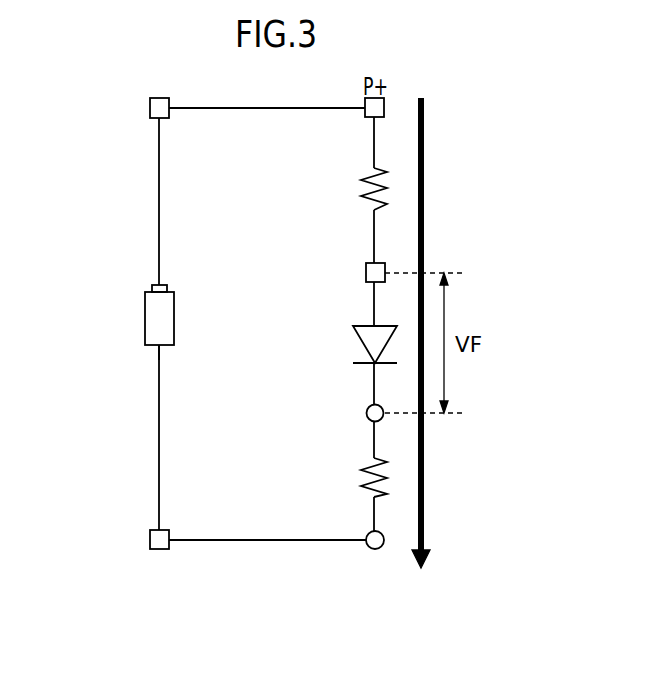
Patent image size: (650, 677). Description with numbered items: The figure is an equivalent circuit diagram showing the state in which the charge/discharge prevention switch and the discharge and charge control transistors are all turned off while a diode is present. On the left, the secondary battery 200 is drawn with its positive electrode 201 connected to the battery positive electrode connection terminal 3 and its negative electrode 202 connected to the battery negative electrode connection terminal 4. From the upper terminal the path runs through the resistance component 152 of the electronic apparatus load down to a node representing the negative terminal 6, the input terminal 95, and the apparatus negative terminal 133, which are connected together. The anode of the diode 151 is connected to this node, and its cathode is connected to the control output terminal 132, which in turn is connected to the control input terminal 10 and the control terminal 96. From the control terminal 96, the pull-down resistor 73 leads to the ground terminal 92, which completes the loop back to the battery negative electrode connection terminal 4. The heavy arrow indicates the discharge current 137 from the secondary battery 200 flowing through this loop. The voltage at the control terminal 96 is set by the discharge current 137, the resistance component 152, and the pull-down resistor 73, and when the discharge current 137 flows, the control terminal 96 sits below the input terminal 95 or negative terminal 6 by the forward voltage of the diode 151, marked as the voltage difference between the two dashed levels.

The battery positive electrode connection terminal 3 is at (150, 104).
The battery negative electrode connection terminal 4 is at (150, 540).
The secondary battery 200 is at (145, 320).
The positive electrode 201 is at (152, 289).
The negative electrode 202 is at (159, 346).
The resistance component 152 is at (372, 178).
The input terminal 95 is at (315, 259).
The negative terminal 6 is at (315, 259).
The apparatus negative terminal 133 is at (368, 263).
The diode 151 is at (358, 344).
The control terminal 96 is at (307, 402).
The control input terminal 10 is at (307, 402).
The control output terminal 132 is at (368, 406).
The pull-down resistor 73 is at (366, 463).
The ground terminal 92 is at (368, 534).
The discharge current 137 is at (424, 164).